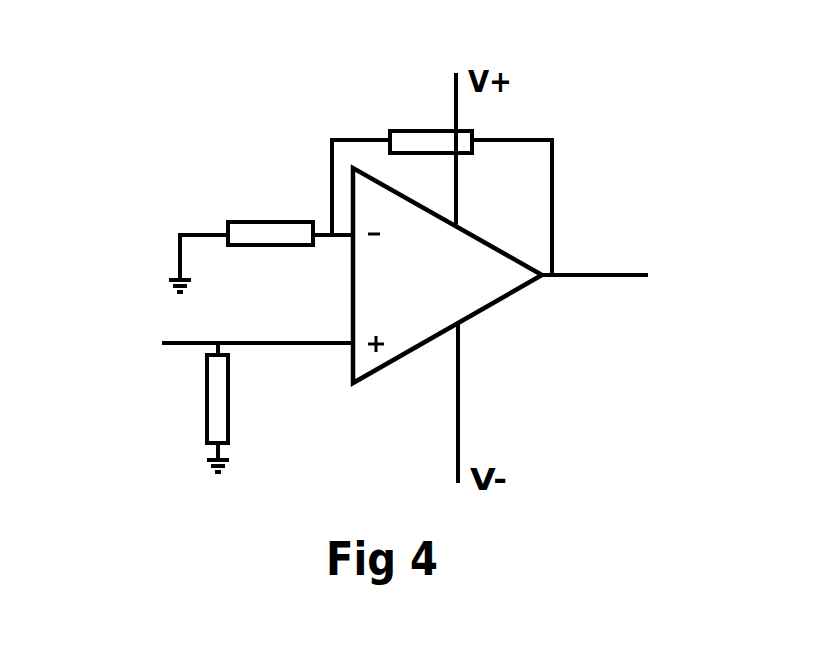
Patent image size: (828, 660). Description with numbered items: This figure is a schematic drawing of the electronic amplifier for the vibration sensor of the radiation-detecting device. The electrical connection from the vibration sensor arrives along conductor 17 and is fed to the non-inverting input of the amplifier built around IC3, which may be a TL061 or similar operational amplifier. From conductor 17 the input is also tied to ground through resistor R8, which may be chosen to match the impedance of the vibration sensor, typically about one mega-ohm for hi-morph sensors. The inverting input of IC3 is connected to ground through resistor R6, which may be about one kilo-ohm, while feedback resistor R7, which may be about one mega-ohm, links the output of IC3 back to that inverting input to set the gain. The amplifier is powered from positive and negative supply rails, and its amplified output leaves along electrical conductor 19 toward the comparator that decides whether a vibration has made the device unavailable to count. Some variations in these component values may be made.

The conductor 17 is at (162, 342).
The electrical conductor 19 is at (645, 272).
The resistor R6 is at (266, 216).
The resistor R7 is at (442, 187).
The resistor R8 is at (247, 407).
The operational amplifier IC3 is at (473, 275).